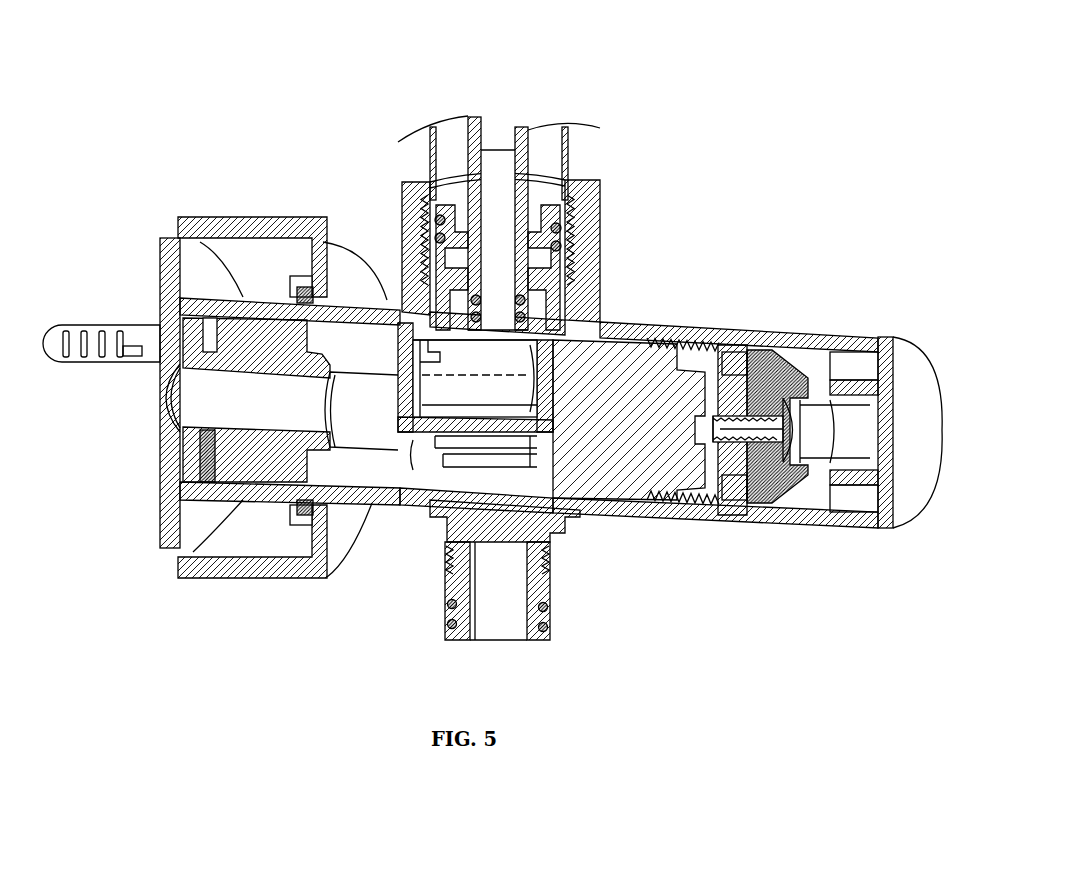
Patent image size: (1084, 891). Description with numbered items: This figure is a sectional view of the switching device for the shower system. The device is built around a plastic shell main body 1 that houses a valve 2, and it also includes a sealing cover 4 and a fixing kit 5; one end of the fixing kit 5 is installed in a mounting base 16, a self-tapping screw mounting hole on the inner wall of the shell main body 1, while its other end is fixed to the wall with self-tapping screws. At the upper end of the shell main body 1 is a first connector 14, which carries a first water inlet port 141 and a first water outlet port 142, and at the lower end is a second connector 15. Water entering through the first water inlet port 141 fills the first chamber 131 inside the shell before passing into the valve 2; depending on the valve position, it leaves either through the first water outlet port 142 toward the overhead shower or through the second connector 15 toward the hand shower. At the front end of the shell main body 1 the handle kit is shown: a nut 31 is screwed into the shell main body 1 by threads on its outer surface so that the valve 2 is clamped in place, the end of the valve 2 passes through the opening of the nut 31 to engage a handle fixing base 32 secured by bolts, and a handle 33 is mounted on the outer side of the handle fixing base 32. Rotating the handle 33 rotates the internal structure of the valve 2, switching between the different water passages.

The shell main body 1 is at (651, 321).
The valve 2 is at (638, 501).
The sealing cover 4 is at (306, 512).
The fixing kit 5 is at (220, 217).
The first connector 14 is at (601, 213).
The second connector 15 is at (556, 597).
The mounting base 16 is at (460, 466).
The nut 31 is at (736, 364).
The handle fixing base 32 is at (804, 366).
The handle 33 is at (889, 339).
The first chamber 131 is at (483, 388).
The first water inlet port 141 is at (500, 180).
The first water outlet port 142 is at (458, 162).